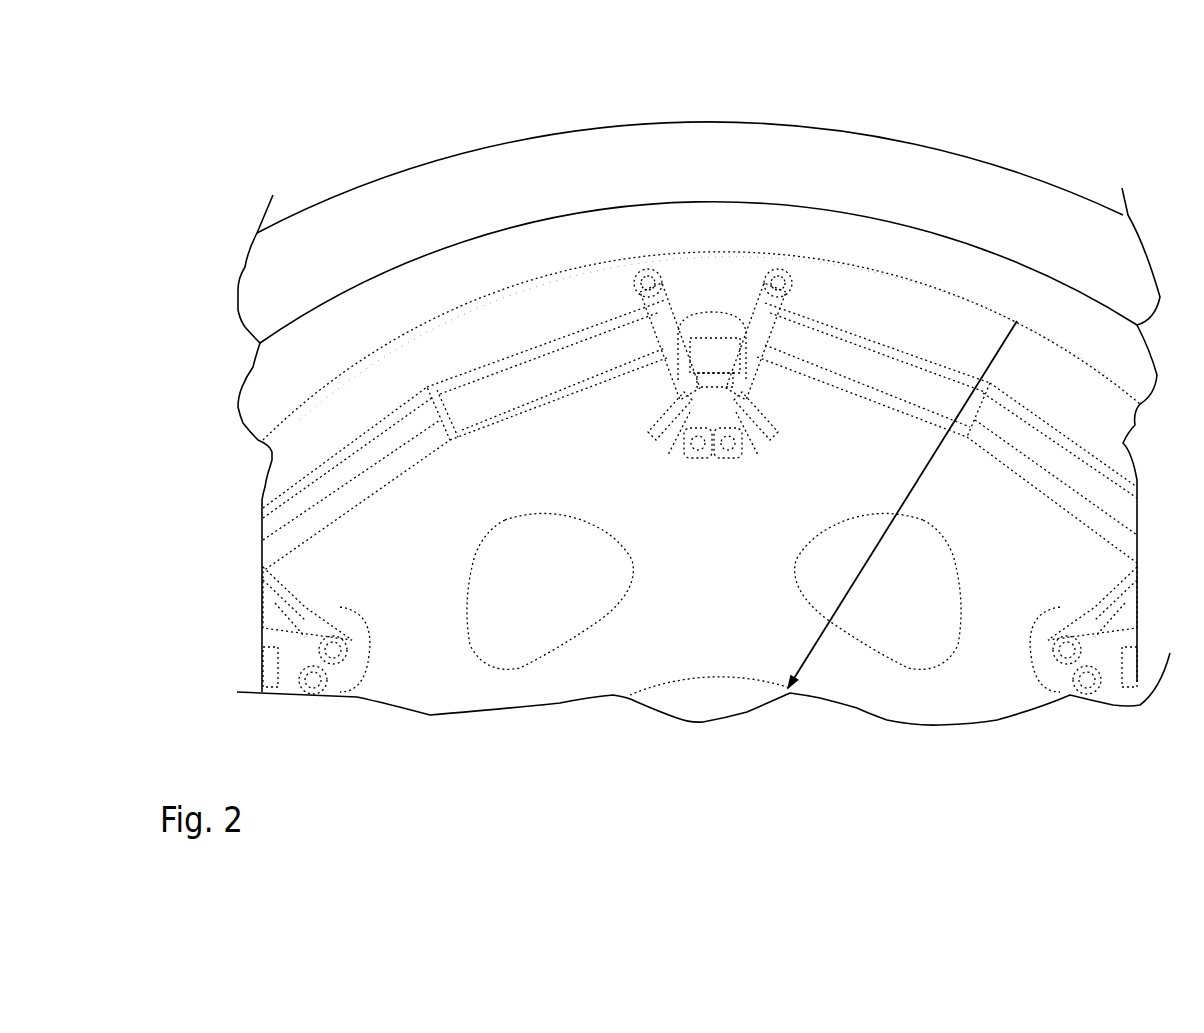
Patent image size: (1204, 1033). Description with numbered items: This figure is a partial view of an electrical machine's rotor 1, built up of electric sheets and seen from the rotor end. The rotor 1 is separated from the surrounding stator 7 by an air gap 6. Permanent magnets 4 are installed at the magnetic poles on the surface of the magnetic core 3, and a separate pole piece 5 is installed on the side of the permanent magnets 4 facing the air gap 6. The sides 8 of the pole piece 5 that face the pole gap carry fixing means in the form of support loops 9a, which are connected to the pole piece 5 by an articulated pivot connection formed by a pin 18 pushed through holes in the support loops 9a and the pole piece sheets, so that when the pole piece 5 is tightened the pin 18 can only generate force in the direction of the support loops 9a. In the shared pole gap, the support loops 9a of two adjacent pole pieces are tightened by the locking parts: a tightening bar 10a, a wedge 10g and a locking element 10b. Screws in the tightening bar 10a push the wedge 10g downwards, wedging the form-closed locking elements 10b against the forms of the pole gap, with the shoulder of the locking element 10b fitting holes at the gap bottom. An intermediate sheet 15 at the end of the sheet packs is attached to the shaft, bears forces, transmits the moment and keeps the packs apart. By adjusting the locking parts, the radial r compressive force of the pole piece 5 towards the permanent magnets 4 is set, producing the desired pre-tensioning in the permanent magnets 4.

The rotor 1 is at (247, 475).
The magnetic core 3 is at (702, 623).
The permanent magnets 4 is at (607, 365).
The pole piece 5 is at (440, 361).
The air gap 6 is at (840, 258).
The stator 7 is at (627, 176).
The sides of the pole piece 8 is at (667, 275).
The support loops 9a is at (678, 383).
The tightening bar 10a is at (709, 362).
The locking element 10b is at (683, 450).
The wedge 10g is at (709, 393).
The intermediate sheet 15 is at (712, 318).
The pin 18 is at (648, 278).
The radial direction r is at (891, 504).